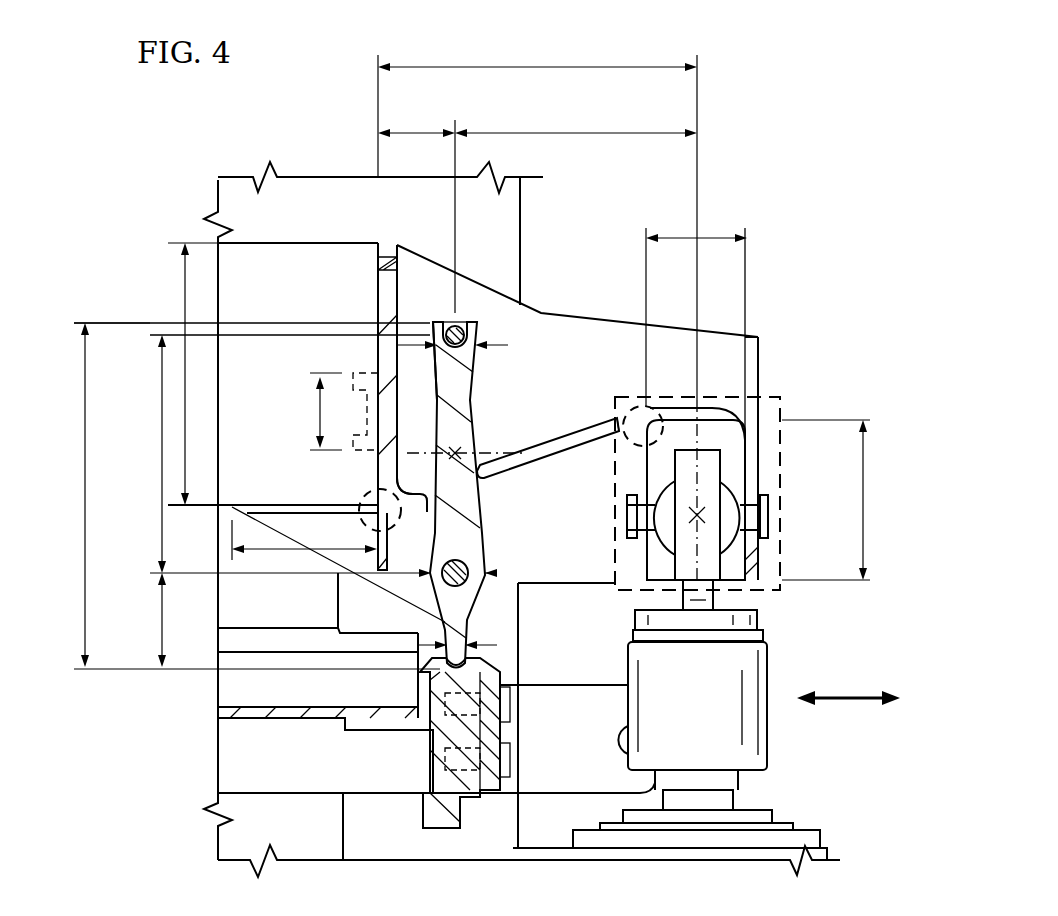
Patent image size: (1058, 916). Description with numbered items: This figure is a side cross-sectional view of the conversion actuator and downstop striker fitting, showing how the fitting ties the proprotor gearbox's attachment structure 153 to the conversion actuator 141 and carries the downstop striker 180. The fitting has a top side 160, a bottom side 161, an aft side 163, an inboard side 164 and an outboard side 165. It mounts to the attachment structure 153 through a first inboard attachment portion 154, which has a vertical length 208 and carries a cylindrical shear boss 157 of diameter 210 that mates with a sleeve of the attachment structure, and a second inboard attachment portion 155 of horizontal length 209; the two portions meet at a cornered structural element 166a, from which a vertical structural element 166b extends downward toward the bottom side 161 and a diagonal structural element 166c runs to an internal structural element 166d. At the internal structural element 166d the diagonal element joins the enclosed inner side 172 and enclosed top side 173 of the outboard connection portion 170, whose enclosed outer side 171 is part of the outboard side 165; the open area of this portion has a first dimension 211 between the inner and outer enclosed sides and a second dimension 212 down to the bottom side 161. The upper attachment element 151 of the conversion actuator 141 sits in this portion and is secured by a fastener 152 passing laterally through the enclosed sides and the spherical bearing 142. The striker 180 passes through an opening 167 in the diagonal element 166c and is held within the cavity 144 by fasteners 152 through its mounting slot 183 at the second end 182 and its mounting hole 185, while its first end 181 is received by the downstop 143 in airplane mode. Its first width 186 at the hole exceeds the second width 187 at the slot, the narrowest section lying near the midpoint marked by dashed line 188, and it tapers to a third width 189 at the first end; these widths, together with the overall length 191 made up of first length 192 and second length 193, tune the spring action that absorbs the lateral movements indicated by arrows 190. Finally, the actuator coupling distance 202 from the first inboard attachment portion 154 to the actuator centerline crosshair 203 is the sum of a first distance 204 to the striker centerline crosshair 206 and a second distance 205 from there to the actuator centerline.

The conversion actuator 141 is at (806, 786).
The spherical bearing 142 is at (725, 480).
The downstop 143 is at (505, 732).
The cavity 144 is at (612, 333).
The upper attachment element 151 is at (757, 620).
The fastener 152 is at (770, 515).
The attachment structure 153 is at (322, 187).
The first inboard attachment portion 154 is at (385, 295).
The second inboard attachment portion 155 is at (272, 508).
The shear boss 157 is at (383, 373).
The top side 160 is at (567, 304).
The bottom side 161 is at (594, 596).
The aft side 163 is at (722, 347).
The inboard side 164 is at (290, 308).
The outboard side 165 is at (786, 348).
The cornered structural element 166a is at (366, 493).
The vertical structural element 166b is at (398, 535).
The diagonal structural element 166c is at (603, 414).
The internal structural element 166d is at (622, 427).
The opening 167 is at (427, 478).
The outboard connection portion 170 is at (800, 445).
The enclosed outer side 171 is at (752, 573).
The enclosed inner side 172 is at (605, 462).
The enclosed top side 173 is at (707, 412).
The downstop striker 180 is at (432, 600).
The first end 181 is at (500, 668).
The second end 182 is at (438, 307).
The mounting slot 183 is at (463, 310).
The mounting hole 185 is at (468, 565).
The first width 186 is at (505, 573).
The second width 187 is at (535, 313).
The dashed-line 188 is at (495, 452).
The third width 189 is at (497, 645).
The arrows 190 is at (845, 698).
The overall length 191 is at (85, 497).
The first length 192 is at (162, 455).
The second length 193 is at (162, 628).
The actuator coupling distance 202 is at (540, 67).
The crosshair 203 is at (740, 545).
The first distance 204 is at (418, 133).
The second distance 205 is at (575, 133).
The crosshair 206 is at (508, 345).
The vertical length 208 is at (182, 292).
The horizontal length 209 is at (280, 555).
The diameter 210 is at (320, 412).
The first dimension 211 is at (685, 238).
The second dimension 212 is at (866, 500).